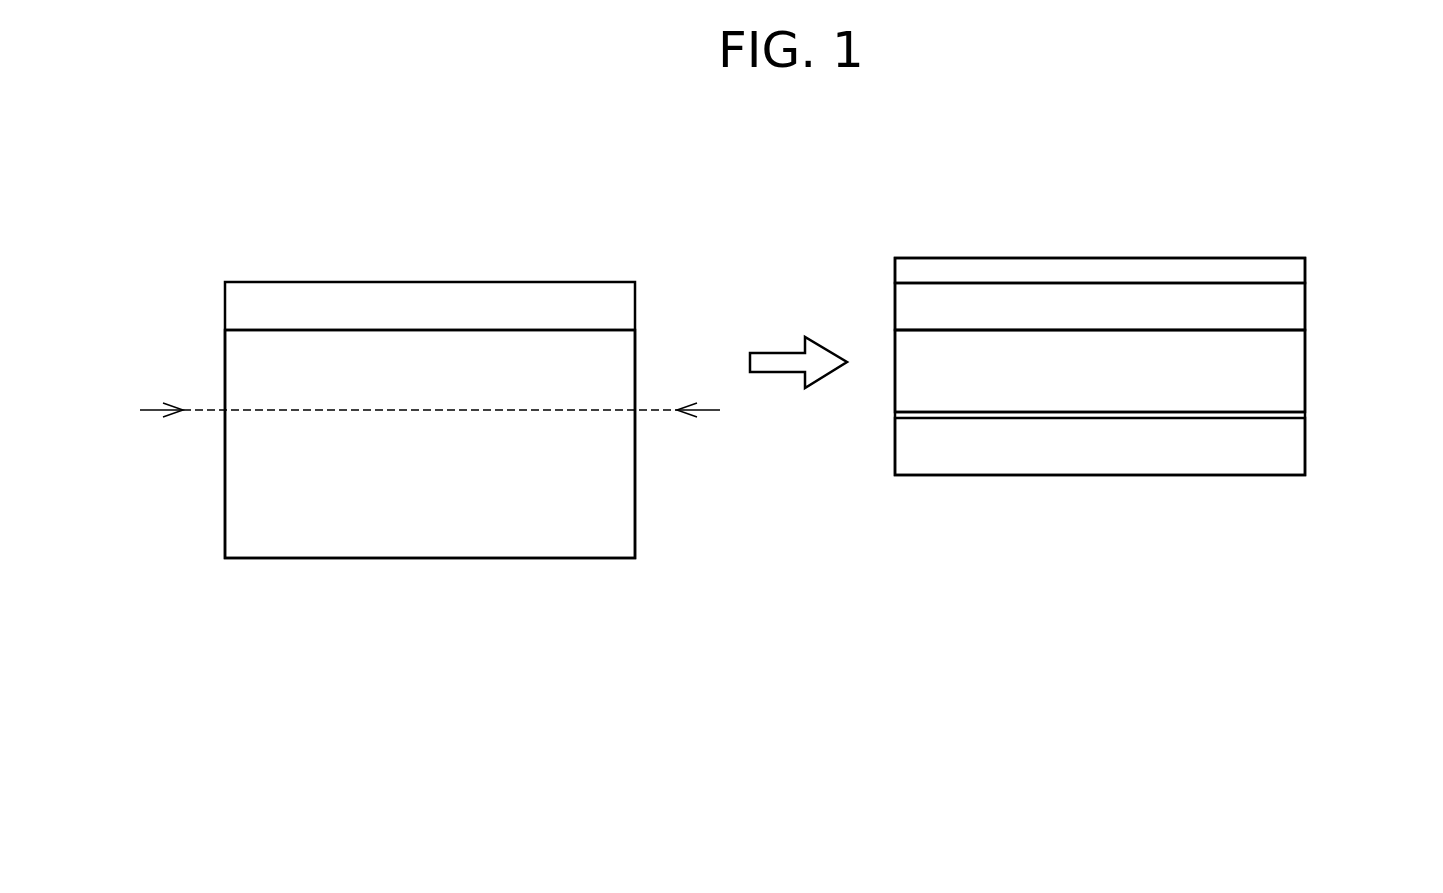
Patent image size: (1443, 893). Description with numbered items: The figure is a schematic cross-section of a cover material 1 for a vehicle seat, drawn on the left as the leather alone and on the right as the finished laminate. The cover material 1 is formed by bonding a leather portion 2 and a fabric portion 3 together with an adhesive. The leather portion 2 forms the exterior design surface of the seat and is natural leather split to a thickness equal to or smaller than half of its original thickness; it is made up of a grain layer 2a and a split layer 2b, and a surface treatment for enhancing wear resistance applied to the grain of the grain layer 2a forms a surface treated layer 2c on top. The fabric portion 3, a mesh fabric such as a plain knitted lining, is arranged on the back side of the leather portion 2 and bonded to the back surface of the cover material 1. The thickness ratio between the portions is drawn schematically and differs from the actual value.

The cover material 1 is at (1148, 208).
The leather portion 2 is at (470, 240).
The grain layer 2a is at (628, 309).
The split layer 2b is at (628, 373).
The surface treated layer 2c is at (1297, 272).
The fabric portion 3 is at (1213, 468).